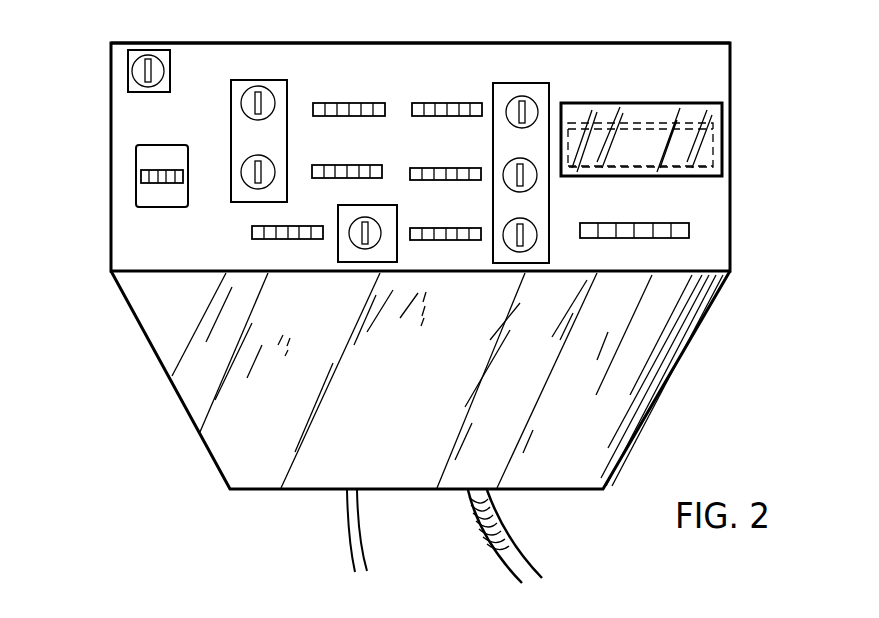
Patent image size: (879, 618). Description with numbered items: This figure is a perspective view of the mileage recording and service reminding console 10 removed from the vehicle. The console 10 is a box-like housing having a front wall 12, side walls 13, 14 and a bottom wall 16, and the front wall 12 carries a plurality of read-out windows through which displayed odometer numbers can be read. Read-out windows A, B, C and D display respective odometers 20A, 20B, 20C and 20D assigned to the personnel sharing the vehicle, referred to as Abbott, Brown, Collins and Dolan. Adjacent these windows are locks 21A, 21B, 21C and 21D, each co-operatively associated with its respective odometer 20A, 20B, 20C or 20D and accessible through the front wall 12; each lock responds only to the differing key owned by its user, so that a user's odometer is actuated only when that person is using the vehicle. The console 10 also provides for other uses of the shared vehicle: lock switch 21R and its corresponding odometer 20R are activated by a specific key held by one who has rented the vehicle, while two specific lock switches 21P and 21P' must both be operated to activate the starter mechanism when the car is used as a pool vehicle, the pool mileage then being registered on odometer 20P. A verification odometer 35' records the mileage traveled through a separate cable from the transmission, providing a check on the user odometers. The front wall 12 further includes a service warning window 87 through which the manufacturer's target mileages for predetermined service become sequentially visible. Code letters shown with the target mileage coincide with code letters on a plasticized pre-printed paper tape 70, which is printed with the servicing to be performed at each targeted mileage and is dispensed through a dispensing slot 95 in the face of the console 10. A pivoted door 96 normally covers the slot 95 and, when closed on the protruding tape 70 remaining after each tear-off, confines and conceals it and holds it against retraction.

The console 10 is at (487, 41).
The front wall 12 is at (587, 54).
The side wall 13 is at (110, 187).
The side wall 14 is at (729, 174).
The bottom wall 16 is at (197, 404).
The odometer 20A is at (344, 102).
The odometer 20B is at (353, 166).
The odometer 20C is at (447, 85).
The odometer 20D is at (452, 168).
The odometer 20R is at (272, 240).
The odometer 20P is at (455, 241).
The lock switch 21R is at (156, 62).
The lock 21A is at (253, 92).
The lock 21B is at (247, 163).
The lock 21C is at (510, 98).
The lock 21D is at (535, 142).
The lock switch 21P is at (352, 251).
The lock switch 21P' is at (522, 223).
The verification odometer 35' is at (634, 247).
The pre-printed paper tape 70 is at (690, 158).
The service warning window 87 is at (168, 185).
The dispensing slot 95 is at (652, 125).
The pivoted door 96 is at (638, 168).
The read-out window A is at (313, 102).
The read-out window B is at (318, 165).
The read-out window C is at (412, 103).
The read-out window D is at (415, 168).